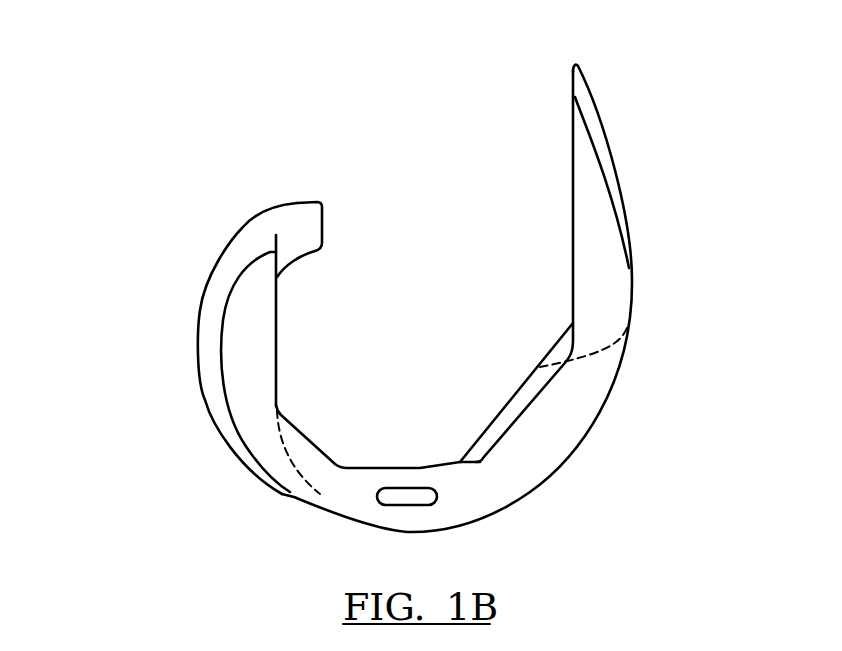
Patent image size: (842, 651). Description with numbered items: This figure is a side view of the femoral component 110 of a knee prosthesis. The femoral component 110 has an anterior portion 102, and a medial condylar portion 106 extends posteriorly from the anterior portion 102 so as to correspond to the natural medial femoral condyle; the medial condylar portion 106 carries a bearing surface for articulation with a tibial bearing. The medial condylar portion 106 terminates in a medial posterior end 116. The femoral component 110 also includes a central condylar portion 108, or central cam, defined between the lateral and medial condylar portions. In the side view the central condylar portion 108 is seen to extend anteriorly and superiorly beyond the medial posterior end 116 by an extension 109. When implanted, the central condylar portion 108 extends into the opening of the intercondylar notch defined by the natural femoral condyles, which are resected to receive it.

The anterior portion 102 is at (572, 187).
The medial condylar portion 106 is at (220, 327).
The central condylar portion 108 is at (203, 403).
The extension 109 is at (310, 200).
The femoral component 110 is at (622, 104).
The medial posterior end 116 is at (271, 250).